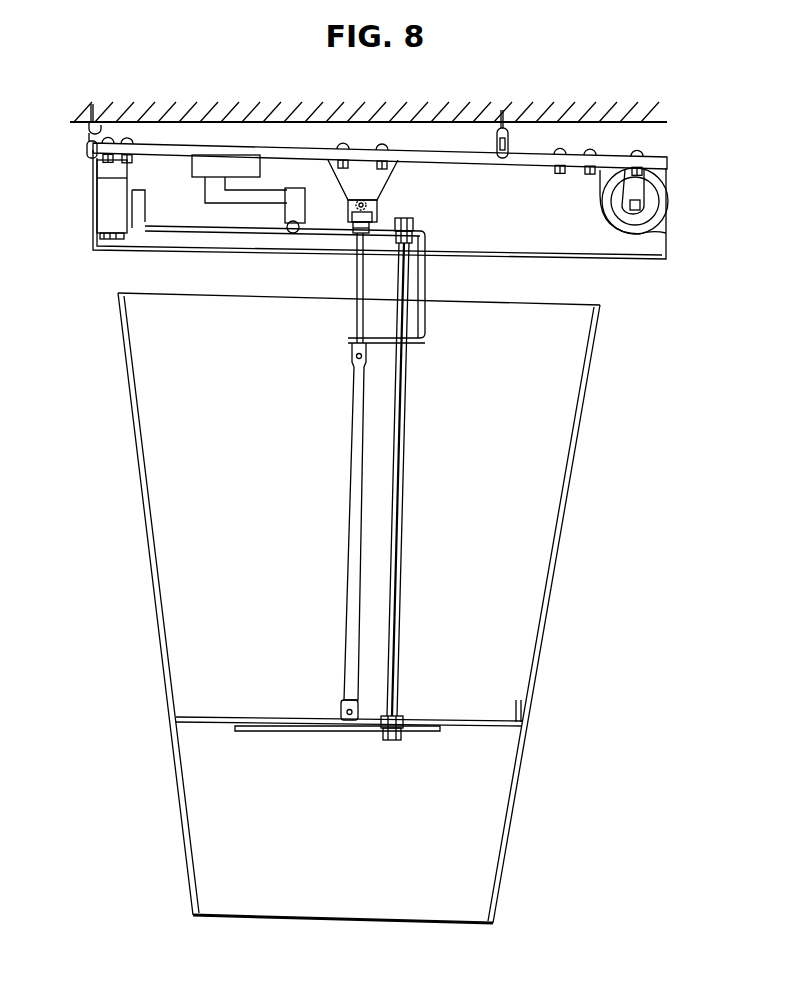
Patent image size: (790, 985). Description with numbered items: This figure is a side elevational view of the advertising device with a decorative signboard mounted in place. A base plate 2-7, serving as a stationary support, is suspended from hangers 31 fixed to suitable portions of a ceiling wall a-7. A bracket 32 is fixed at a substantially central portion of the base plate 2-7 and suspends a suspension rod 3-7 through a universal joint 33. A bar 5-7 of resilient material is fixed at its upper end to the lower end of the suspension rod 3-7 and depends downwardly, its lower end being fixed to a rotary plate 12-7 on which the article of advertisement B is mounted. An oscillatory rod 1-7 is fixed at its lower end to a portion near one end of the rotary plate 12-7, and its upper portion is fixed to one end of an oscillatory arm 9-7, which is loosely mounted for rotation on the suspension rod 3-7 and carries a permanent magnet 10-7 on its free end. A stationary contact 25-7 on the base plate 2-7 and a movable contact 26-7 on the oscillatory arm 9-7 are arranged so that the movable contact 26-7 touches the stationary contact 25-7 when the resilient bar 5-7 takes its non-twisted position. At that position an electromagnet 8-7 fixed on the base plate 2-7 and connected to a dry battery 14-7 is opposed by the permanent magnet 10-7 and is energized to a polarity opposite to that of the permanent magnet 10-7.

The ceiling wall a-7 is at (468, 113).
The hangers 31 is at (88, 147).
The base plate 2-7 is at (598, 243).
The electromagnet 8-7 is at (110, 207).
The permanent magnet 10-7 is at (138, 230).
The oscillatory arm 9-7 is at (218, 238).
The stationary contact 25-7 is at (268, 202).
The movable contact 26-7 is at (295, 203).
The bracket 32 is at (377, 178).
The universal joint 33 is at (378, 210).
The suspension rod 3-7 is at (357, 280).
The bar of resilient material 5-7 is at (350, 503).
The oscillatory rod 1-7 is at (407, 455).
The dry battery 14-7 is at (666, 201).
The article of advertisement B is at (557, 592).
The rotary plate 12-7 is at (296, 731).